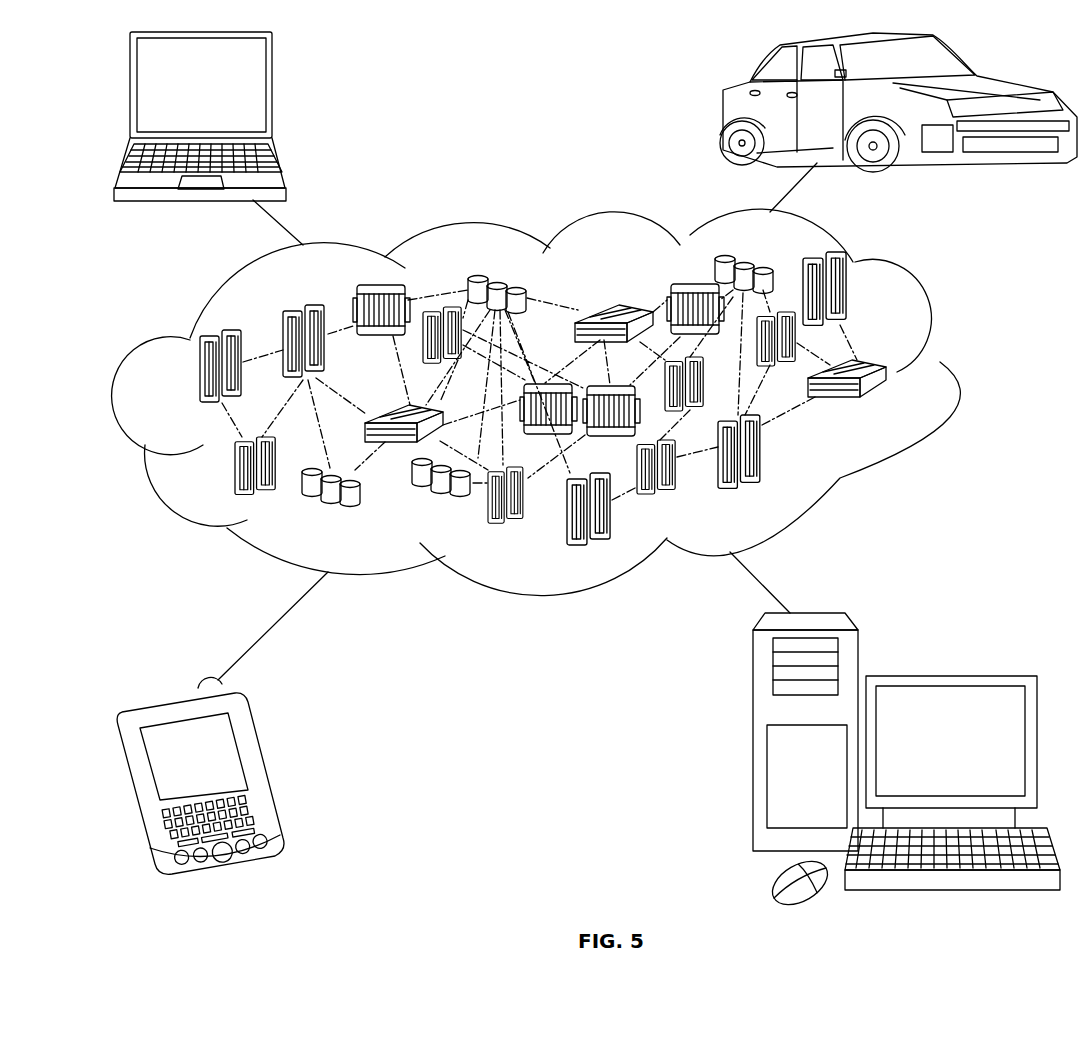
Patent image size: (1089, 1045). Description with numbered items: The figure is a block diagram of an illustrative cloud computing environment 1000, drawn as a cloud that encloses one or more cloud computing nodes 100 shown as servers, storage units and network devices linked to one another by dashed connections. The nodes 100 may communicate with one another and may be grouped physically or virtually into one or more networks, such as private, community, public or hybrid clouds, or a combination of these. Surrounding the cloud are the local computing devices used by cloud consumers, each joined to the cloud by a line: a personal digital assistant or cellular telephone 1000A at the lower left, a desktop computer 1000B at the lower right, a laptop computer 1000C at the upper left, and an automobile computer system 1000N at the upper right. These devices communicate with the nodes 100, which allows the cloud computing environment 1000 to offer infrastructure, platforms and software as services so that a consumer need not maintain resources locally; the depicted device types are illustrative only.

The cloud computing environment 1000 is at (950, 377).
The cloud computing nodes 100 is at (897, 408).
The personal digital assistant (PDA) or cellular telephone 1000A is at (258, 770).
The desktop computer 1000B is at (946, 672).
The laptop computer 1000C is at (273, 96).
The automobile computer system 1000N is at (723, 110).